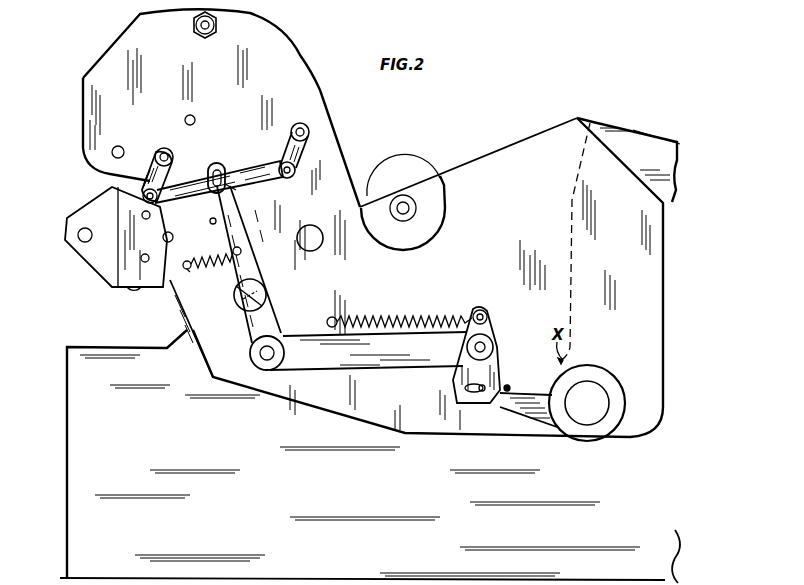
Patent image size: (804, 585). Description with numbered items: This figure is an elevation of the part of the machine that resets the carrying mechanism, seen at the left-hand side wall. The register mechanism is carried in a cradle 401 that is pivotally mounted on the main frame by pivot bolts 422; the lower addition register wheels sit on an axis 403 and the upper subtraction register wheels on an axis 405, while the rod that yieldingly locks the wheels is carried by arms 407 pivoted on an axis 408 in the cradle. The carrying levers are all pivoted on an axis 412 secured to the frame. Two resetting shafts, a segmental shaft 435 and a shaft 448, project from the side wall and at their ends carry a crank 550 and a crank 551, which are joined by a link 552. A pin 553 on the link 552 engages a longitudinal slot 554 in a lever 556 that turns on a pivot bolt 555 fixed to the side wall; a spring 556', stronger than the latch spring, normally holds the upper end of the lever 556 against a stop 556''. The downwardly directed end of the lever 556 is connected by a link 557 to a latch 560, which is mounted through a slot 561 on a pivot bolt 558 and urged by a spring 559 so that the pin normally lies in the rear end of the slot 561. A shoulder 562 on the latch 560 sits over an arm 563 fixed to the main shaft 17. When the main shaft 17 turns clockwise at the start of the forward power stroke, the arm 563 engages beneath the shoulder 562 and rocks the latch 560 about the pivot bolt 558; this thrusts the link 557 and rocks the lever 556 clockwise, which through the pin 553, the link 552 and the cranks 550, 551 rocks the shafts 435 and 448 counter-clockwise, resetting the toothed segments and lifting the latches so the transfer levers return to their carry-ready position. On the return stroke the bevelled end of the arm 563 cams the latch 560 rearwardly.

The axis 412 is at (217, 23).
The segmental shaft 435 is at (308, 128).
The shaft 448 is at (168, 150).
The crank 551 is at (170, 165).
The link 552 is at (253, 173).
The pin 553 is at (218, 163).
The longitudinal slot 554 is at (232, 187).
The crank 550 is at (303, 167).
The cradle 401 is at (112, 187).
The axis 405 is at (142, 215).
The axis 408 is at (80, 236).
The arms 407 is at (130, 288).
The axis 403 is at (146, 262).
The pivot bolts 422 is at (170, 235).
The lever 556 is at (250, 264).
The stop 556'' is at (210, 250).
The spring 556' is at (208, 280).
The pivot bolt 555 is at (255, 296).
The spring 559 is at (380, 318).
The latch 560 is at (490, 323).
The link 557 is at (403, 357).
The shoulder 562 is at (508, 386).
The pivot bolt 558 is at (468, 397).
The slot 561 is at (483, 398).
The arm 563 is at (540, 417).
The main shaft 17 is at (595, 413).